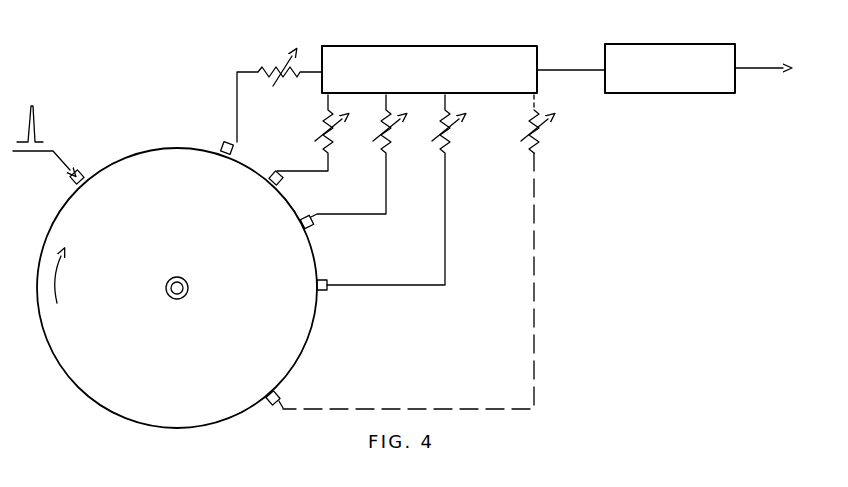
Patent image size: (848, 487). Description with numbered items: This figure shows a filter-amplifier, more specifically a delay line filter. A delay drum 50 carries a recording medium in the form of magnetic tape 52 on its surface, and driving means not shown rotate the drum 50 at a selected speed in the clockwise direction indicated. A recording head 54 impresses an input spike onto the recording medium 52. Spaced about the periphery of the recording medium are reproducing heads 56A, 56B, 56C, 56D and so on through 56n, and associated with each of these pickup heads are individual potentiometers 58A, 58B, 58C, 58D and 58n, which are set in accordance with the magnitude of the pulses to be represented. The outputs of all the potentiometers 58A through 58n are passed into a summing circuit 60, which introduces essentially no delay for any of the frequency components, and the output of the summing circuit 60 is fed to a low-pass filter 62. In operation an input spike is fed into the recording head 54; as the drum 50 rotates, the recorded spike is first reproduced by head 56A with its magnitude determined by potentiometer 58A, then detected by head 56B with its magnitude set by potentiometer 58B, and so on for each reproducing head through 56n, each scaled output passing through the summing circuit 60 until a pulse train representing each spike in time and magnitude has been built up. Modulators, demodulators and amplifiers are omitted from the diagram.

The delay drum 50 is at (105, 403).
The magnetic tape 52 is at (61, 366).
The recording head 54 is at (70, 181).
The reproducing head 56A is at (222, 142).
The reproducing head 56B is at (282, 182).
The reproducing head 56C is at (312, 226).
The reproducing head 56D is at (327, 291).
The reproducing head 56n is at (280, 396).
The potentiometer 58A is at (272, 66).
The potentiometer 58B is at (327, 121).
The potentiometer 58C is at (385, 146).
The potentiometer 58D is at (448, 144).
The potentiometer 58n is at (538, 144).
The summing circuit 60 is at (488, 46).
The low-pass filter 62 is at (688, 44).